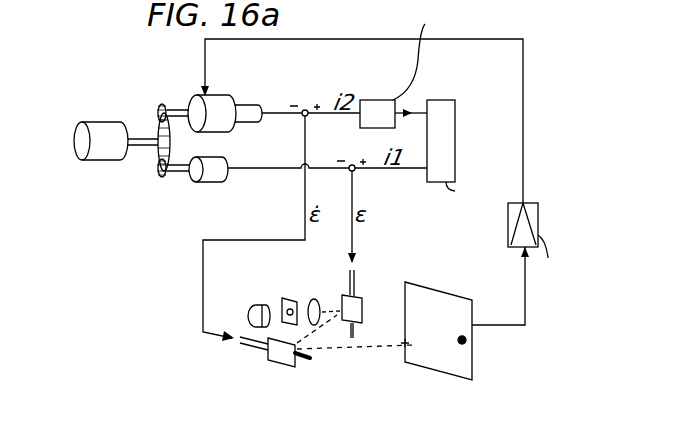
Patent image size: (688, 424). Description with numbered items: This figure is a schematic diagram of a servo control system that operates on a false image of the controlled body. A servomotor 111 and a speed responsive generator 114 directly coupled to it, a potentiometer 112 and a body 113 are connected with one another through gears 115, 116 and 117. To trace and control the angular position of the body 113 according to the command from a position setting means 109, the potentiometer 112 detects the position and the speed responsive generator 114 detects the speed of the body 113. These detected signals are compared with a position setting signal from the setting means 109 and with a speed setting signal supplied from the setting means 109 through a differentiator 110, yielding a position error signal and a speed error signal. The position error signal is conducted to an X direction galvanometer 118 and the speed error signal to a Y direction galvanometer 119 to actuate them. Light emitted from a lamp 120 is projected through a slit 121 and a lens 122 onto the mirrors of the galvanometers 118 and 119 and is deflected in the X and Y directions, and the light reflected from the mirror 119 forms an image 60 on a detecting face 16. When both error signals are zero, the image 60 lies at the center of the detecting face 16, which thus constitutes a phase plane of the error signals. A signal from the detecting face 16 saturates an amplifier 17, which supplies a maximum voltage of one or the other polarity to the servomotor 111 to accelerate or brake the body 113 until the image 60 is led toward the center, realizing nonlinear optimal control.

The detecting face 16 is at (455, 297).
The amplifier 17 is at (538, 222).
The image 60 is at (466, 345).
The position setting means 109 is at (443, 100).
The differentiator 110 is at (377, 100).
The servomotor 111 is at (220, 96).
The potentiometer 112 is at (213, 179).
The body 113 is at (98, 157).
The speed responsive generator 114 is at (252, 106).
The gear 115 is at (160, 103).
The gear 116 is at (158, 128).
The gear 117 is at (158, 178).
The X direction galvanometer 118 is at (363, 306).
The Y direction galvanometer 119 is at (276, 367).
The lamp 120 is at (254, 306).
The slit 121 is at (287, 298).
The lens 122 is at (314, 300).